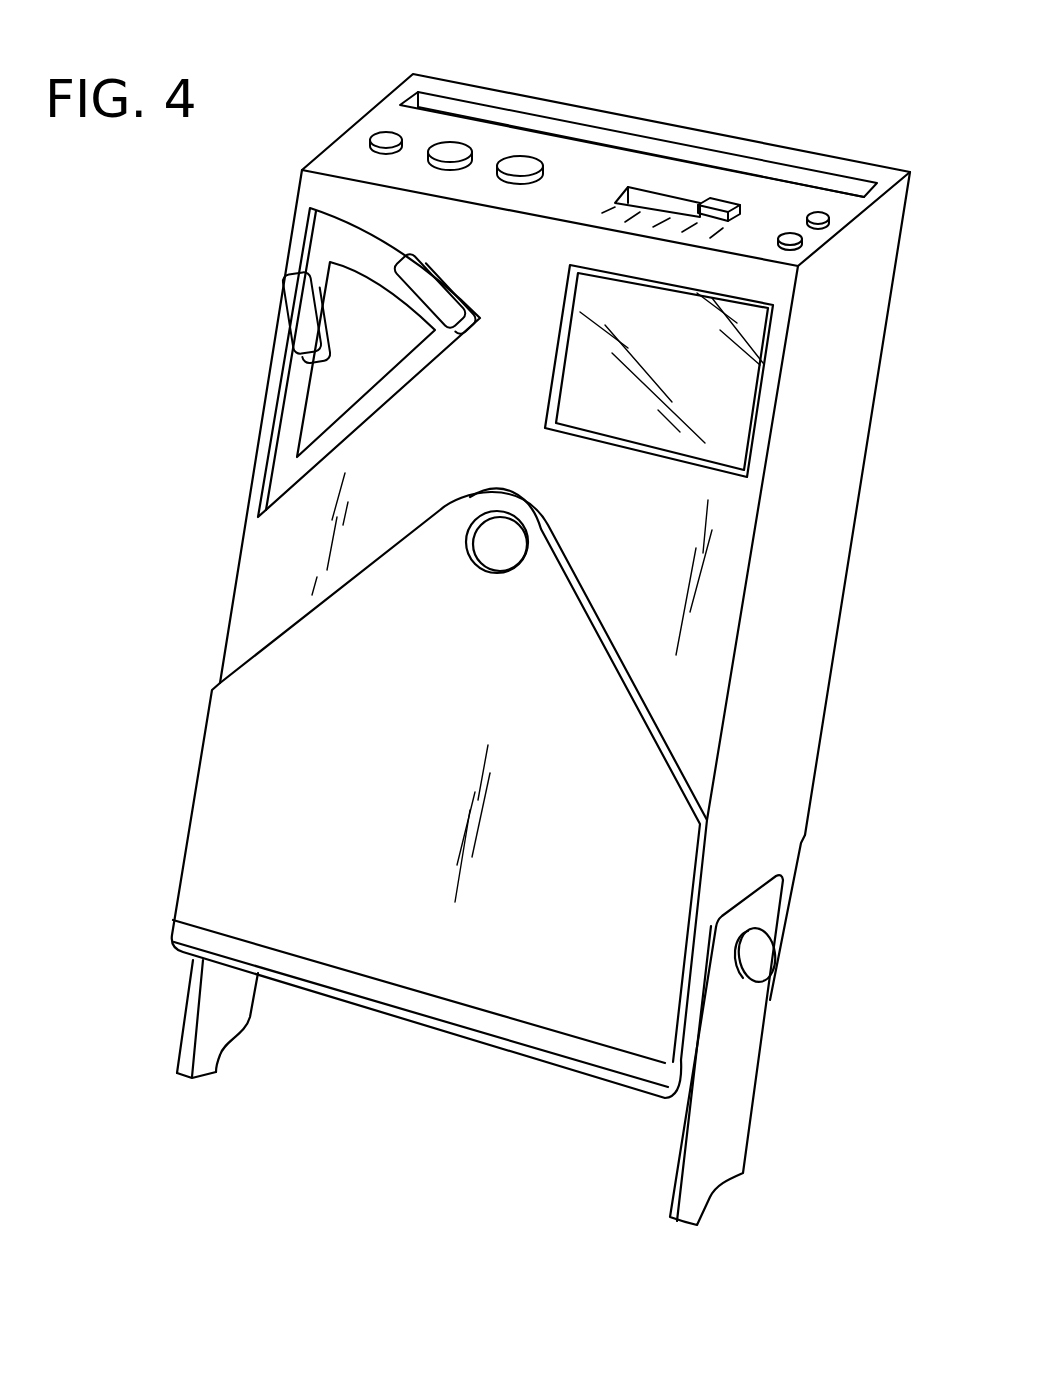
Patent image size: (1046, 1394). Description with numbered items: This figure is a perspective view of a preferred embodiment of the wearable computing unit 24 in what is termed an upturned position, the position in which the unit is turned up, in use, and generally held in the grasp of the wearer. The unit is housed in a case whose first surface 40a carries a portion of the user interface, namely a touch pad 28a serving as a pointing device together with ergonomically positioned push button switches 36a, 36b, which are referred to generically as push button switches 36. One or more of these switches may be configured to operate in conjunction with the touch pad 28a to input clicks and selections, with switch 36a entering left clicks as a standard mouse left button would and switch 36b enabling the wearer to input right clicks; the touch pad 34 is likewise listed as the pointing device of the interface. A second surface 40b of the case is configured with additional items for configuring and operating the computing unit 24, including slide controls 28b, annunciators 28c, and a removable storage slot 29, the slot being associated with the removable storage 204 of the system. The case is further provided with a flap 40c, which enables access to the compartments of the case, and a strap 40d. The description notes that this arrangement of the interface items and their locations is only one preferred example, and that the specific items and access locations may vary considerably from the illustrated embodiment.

The wearable computing unit 24 is at (541, 617).
The touch pad 28a is at (340, 420).
The slide controls 28b is at (716, 198).
The annunciators 28c is at (446, 147).
The removable storage (disk) slot 29 is at (833, 187).
The removable storage 204 is at (537, 124).
The touch pad (pointing device) 34 is at (617, 410).
The push button switches 36 is at (817, 212).
The push button switch 36a is at (300, 300).
The push button switch 36b is at (450, 298).
The first surface 40a is at (475, 427).
The second surface 40b is at (601, 159).
The flap 40c is at (420, 739).
The strap 40d is at (205, 1055).